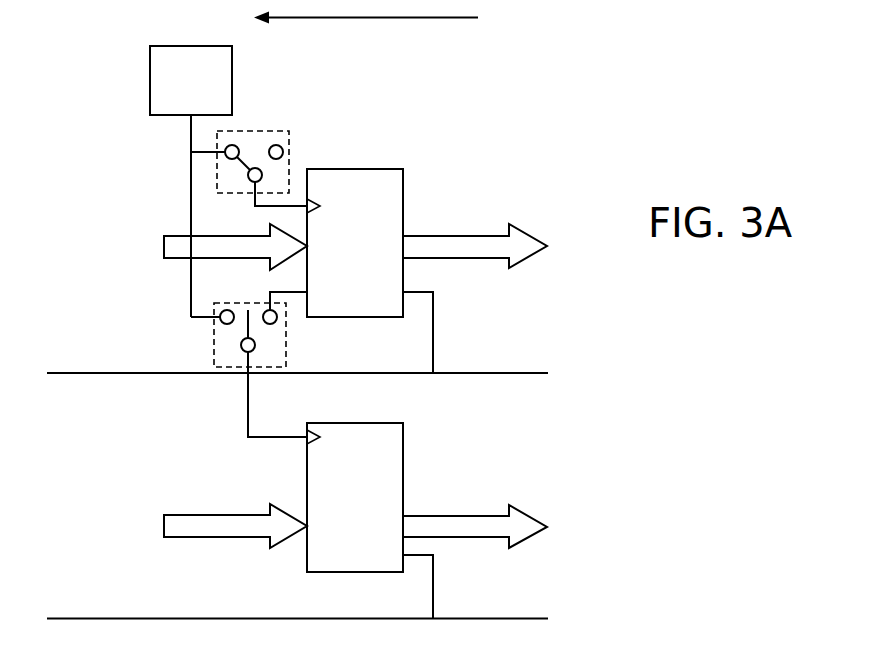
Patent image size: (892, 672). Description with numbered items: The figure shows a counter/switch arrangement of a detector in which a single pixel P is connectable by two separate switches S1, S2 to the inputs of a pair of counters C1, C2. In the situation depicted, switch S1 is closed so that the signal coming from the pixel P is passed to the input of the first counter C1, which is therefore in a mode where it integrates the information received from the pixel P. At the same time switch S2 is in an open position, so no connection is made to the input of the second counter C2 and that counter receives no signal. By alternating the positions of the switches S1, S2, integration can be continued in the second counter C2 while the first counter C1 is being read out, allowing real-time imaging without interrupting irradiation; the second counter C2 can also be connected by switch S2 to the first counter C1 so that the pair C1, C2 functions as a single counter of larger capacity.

The pixel P is at (191, 181).
The switch S1 is at (290, 133).
The switch S2 is at (214, 345).
The first counter C1 is at (407, 179).
The second counter C2 is at (405, 468).